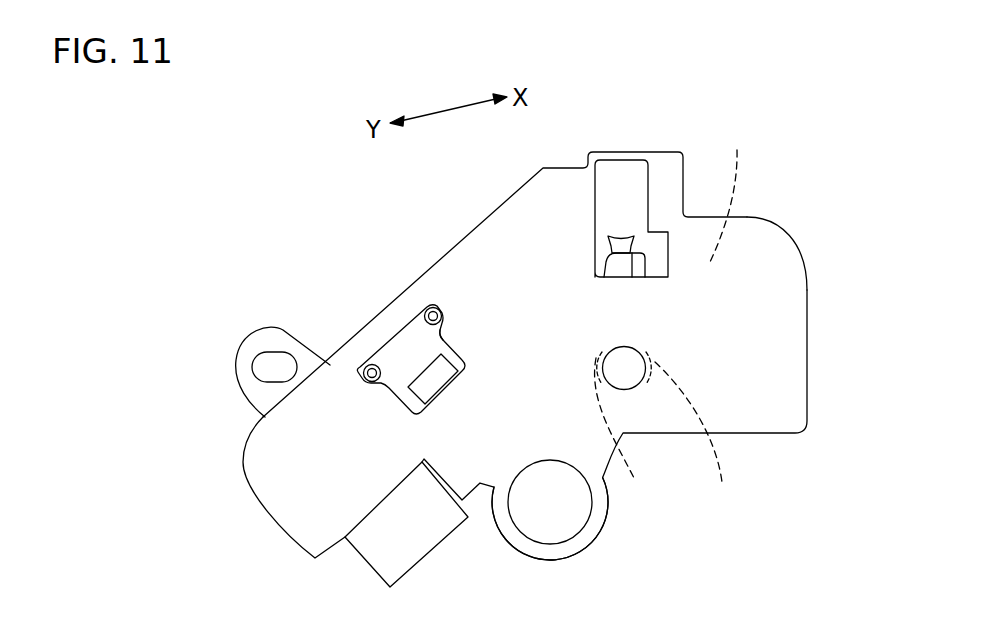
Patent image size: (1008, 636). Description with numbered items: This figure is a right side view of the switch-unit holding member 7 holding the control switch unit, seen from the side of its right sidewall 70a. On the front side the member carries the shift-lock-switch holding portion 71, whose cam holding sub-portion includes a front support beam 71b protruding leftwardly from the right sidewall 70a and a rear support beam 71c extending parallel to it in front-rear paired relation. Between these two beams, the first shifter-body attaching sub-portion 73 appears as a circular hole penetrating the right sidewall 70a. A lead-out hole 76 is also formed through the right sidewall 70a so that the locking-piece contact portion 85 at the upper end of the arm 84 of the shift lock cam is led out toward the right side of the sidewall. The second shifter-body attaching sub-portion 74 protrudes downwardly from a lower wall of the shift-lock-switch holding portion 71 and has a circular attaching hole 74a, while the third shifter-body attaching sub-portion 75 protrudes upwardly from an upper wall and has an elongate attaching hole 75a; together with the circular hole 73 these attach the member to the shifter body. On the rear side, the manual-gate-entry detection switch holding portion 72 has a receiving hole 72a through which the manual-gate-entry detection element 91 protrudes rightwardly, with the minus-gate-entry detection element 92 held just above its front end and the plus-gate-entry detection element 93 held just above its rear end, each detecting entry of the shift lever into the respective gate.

The switch-unit holding member 7 is at (765, 188).
The right sidewall 70a is at (778, 268).
The shift-lock-switch holding portion 71 is at (732, 193).
The front support beam 71b is at (701, 437).
The rear support beam 71c is at (628, 435).
The manual-gate-entry detection switch holding portion 72 is at (417, 360).
The receiving hole 72a is at (443, 330).
The first shifter-body attaching sub-portion 73 is at (625, 368).
The second shifter-body attaching sub-portion 74 is at (505, 537).
The circular attaching hole 74a is at (555, 518).
The third shifter-body attaching sub-portion 75 is at (257, 338).
The elongate attaching hole 75a is at (263, 372).
The lead-out hole 76 is at (637, 200).
The arm 84 is at (613, 268).
The locking-piece contact portion 85 is at (616, 238).
The manual-gate-entry detection element 91 is at (433, 380).
The minus-gate-entry detection element 92 is at (432, 305).
The plus-gate-entry detection element 93 is at (362, 362).